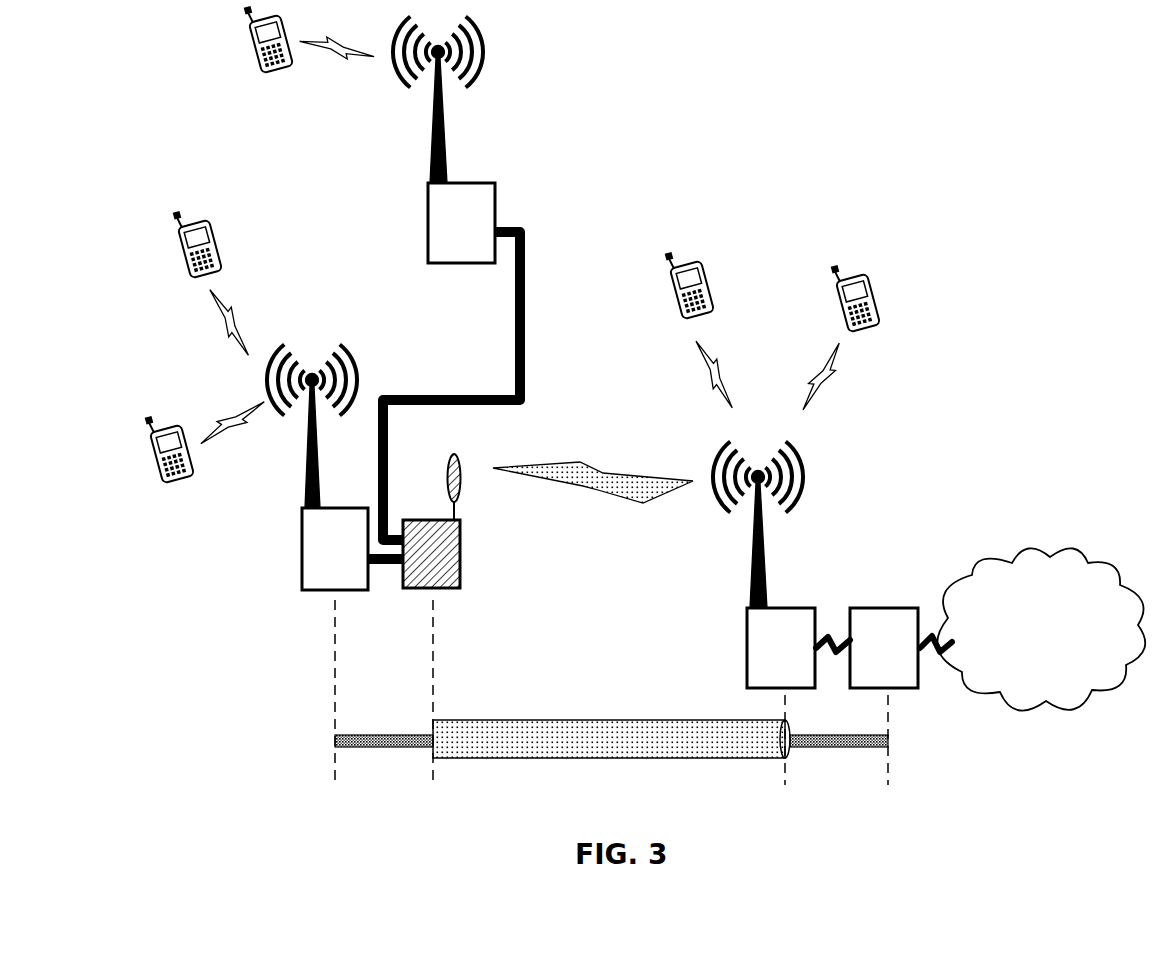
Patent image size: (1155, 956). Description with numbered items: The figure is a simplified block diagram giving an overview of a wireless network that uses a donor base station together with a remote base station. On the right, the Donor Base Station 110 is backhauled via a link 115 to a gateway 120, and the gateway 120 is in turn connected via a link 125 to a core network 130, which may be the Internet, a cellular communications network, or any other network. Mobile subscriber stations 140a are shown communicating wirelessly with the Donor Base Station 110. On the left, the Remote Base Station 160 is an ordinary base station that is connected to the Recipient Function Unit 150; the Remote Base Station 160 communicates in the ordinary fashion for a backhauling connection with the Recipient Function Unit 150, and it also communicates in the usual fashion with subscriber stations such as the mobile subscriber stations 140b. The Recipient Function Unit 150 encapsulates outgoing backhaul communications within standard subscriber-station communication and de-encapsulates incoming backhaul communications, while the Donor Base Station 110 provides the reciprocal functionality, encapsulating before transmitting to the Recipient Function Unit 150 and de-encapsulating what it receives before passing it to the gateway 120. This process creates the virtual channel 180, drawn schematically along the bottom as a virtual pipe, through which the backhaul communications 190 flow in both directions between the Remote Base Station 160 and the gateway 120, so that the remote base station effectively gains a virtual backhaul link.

The Donor Base Station 110 is at (747, 648).
The link 115 is at (836, 630).
The gateway 120 is at (885, 608).
The link 125 is at (942, 635).
The core network 130 is at (1026, 552).
The mobile subscriber stations 140a is at (872, 300).
The mobile subscriber stations 140b is at (246, 62).
The Recipient Function Unit 150 is at (460, 555).
The Remote Base Station 160 is at (335, 508).
The virtual channel 180 is at (610, 718).
The backhaul communications 190 is at (835, 747).